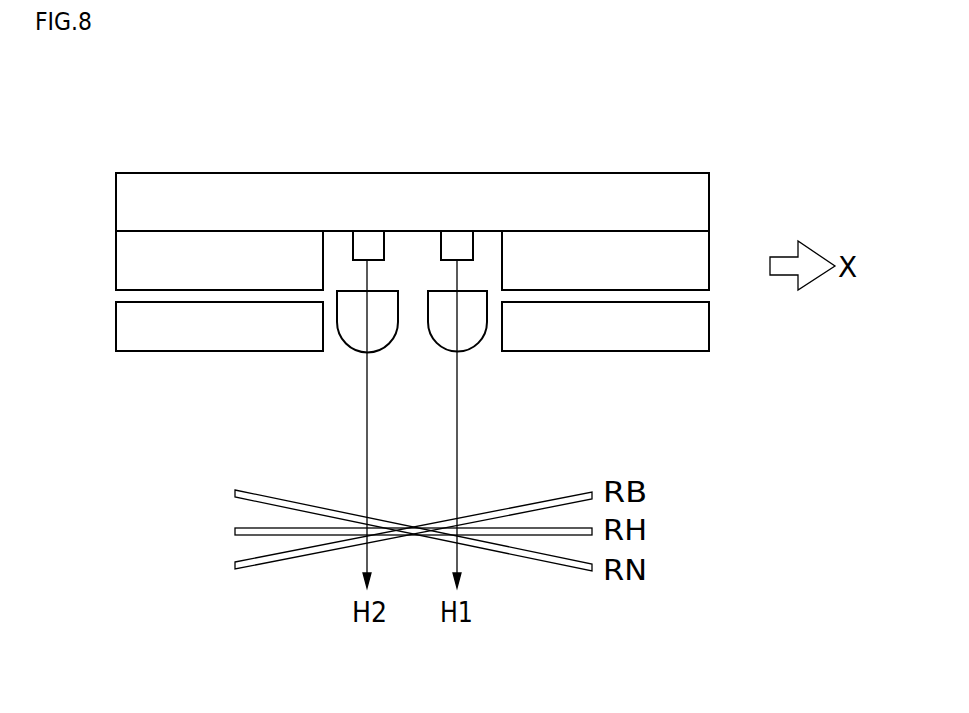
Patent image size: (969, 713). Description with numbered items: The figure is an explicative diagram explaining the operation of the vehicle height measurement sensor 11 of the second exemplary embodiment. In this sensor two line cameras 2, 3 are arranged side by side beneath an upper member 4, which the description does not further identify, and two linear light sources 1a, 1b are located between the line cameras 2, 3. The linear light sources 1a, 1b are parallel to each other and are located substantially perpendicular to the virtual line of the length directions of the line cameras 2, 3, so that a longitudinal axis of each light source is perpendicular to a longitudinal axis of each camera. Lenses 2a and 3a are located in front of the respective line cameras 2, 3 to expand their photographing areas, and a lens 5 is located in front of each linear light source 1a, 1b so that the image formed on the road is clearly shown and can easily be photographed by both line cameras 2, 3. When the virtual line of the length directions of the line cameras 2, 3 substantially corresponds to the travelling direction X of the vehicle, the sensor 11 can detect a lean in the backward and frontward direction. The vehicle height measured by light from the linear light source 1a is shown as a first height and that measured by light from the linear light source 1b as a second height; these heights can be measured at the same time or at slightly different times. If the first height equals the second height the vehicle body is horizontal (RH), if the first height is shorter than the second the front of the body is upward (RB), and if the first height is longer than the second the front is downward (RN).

The vehicle height measurement sensor 11 is at (692, 144).
The holder / cover member 4 is at (185, 181).
The line camera 2 is at (128, 265).
The line camera 3 is at (697, 265).
The lens 2a is at (131, 331).
The lens 3a is at (697, 328).
The linear light source 1b is at (367, 245).
The linear light source 1a is at (458, 243).
The lens 5 is at (438, 333).